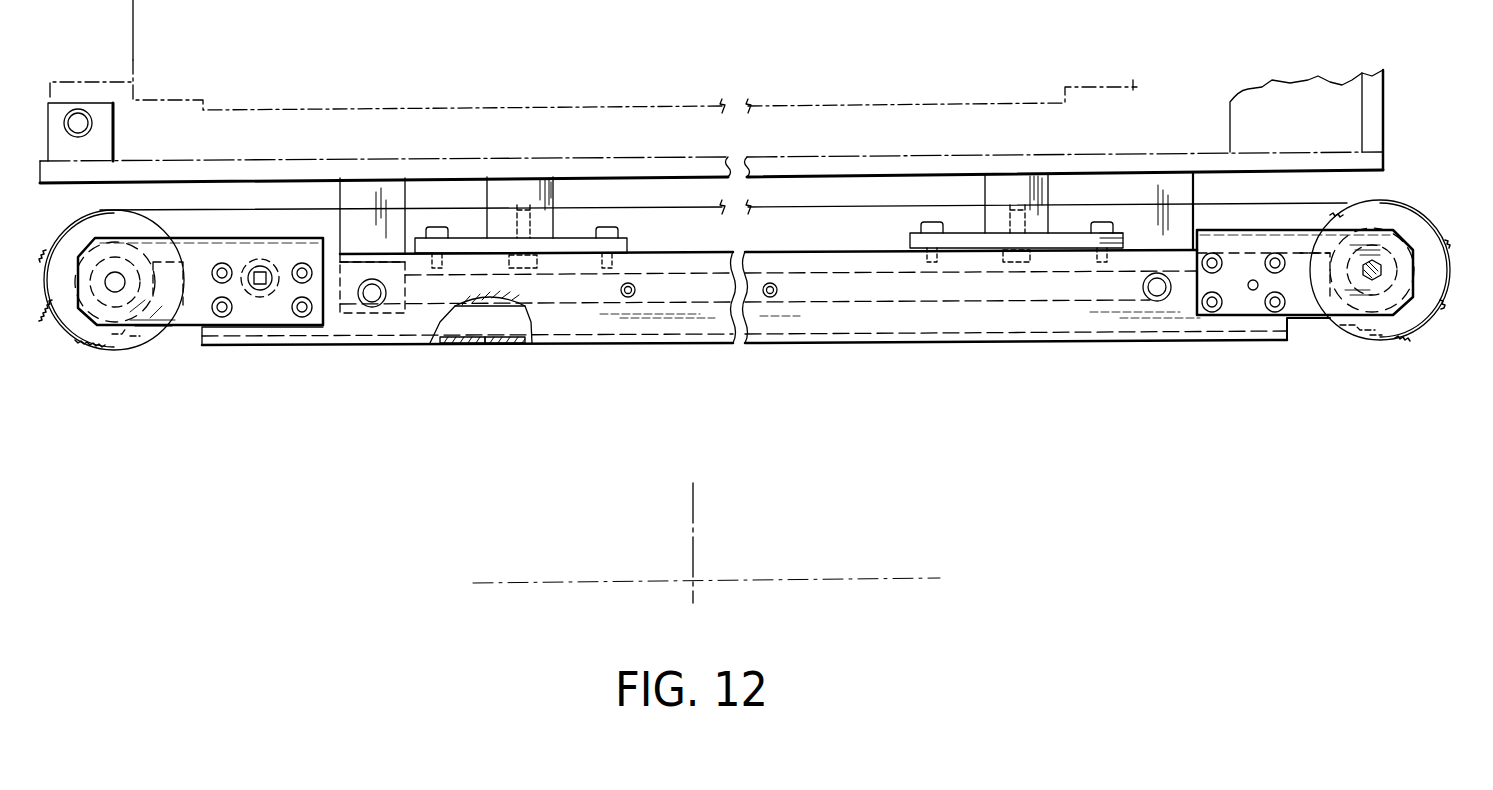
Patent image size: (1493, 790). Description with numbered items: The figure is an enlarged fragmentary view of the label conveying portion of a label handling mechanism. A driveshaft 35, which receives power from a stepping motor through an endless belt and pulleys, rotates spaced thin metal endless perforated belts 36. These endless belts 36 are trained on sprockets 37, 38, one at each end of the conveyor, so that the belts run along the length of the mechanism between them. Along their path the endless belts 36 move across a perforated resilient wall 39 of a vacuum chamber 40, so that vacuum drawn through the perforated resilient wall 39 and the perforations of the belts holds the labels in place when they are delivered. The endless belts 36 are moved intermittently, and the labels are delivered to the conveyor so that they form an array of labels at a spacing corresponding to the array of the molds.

The driveshaft 35 is at (1381, 272).
The endless perforated belts 36 is at (505, 347).
The sprocket 37 is at (1390, 323).
The sprocket 38 is at (105, 348).
The perforated resilient wall 39 is at (463, 346).
The vacuum chamber 40 is at (512, 326).